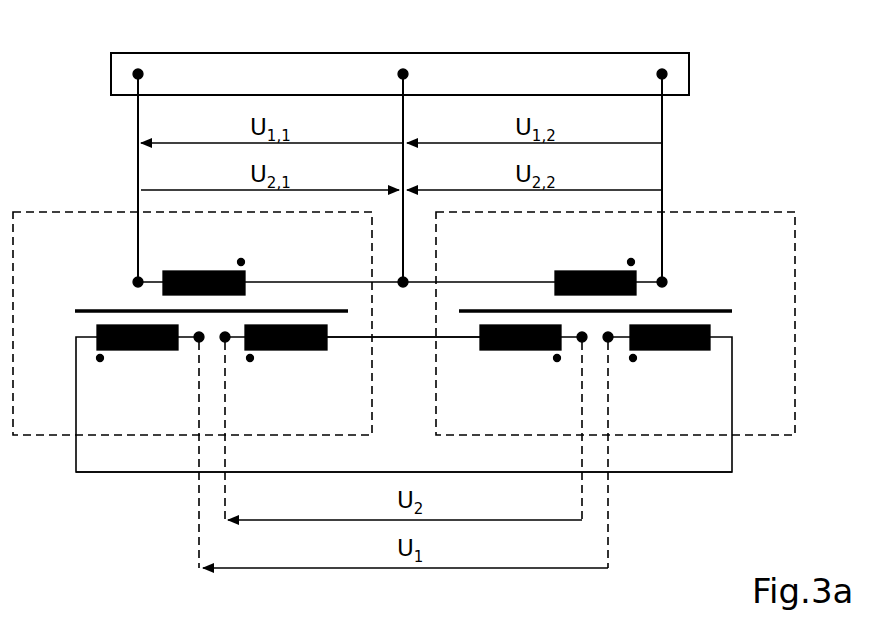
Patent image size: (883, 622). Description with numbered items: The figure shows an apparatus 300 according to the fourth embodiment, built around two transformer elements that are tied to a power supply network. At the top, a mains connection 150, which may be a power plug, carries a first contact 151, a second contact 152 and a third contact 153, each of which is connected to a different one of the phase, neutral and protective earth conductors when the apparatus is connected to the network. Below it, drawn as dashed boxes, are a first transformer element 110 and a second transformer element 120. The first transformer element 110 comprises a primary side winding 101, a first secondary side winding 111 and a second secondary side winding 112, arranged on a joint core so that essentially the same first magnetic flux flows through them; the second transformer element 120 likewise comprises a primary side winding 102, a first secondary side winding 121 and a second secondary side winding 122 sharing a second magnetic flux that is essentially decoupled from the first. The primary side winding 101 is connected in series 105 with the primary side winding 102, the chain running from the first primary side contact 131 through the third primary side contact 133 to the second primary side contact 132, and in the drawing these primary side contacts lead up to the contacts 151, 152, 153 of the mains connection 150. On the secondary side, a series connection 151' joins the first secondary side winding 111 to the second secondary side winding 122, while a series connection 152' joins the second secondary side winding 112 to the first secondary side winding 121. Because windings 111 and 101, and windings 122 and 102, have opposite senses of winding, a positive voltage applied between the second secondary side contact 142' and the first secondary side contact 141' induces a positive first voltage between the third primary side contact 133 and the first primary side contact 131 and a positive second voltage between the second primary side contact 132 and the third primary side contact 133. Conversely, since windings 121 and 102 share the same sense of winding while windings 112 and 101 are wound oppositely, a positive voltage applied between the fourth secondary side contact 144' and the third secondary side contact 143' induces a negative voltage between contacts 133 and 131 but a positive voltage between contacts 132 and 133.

The apparatus 300 is at (745, 75).
The mains connection 150 is at (543, 52).
The first contact 151 is at (153, 144).
The second contact 152 is at (418, 144).
The third contact 153 is at (666, 65).
The first transformer element 110 is at (66, 210).
The second transformer element 120 is at (745, 210).
The primary side winding 101 is at (195, 270).
The primary side winding 102 is at (585, 270).
The first primary side contact 131 is at (134, 278).
The second primary side contact 132 is at (668, 279).
The third primary side contact 133 is at (399, 279).
The series connection 105 is at (386, 286).
The first secondary side winding 111 is at (135, 352).
The second secondary side winding 112 is at (302, 352).
The first secondary side winding 121 is at (505, 352).
The second secondary side winding 122 is at (685, 352).
The first secondary side contact 141' is at (176, 450).
The second secondary side contact 142' is at (631, 450).
The third secondary side contact 143' is at (249, 426).
The fourth secondary side contact 144' is at (556, 426).
The series connection 151' is at (404, 497).
The series connection 152' is at (403, 363).